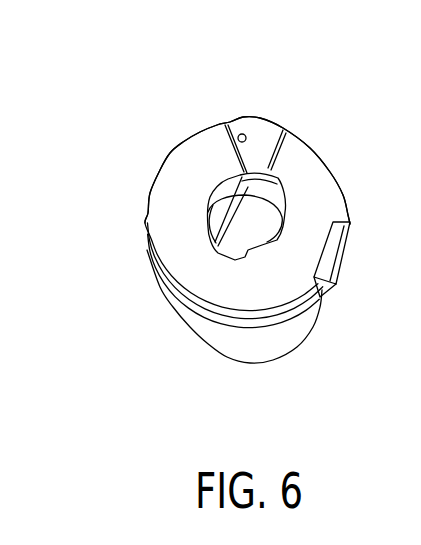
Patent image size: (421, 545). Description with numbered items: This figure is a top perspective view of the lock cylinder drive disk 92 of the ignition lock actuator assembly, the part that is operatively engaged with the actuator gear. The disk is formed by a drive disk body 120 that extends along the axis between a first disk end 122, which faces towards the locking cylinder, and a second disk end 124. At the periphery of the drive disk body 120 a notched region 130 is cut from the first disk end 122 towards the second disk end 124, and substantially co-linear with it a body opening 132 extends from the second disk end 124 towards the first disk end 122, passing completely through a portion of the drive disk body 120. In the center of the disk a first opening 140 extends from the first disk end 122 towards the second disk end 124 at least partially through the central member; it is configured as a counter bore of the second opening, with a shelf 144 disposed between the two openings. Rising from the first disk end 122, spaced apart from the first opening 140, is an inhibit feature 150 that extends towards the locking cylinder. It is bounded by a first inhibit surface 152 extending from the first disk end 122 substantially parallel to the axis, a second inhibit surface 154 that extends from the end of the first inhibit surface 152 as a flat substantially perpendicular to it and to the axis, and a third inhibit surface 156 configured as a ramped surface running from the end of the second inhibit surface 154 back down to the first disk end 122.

The lock cylinder drive disk 92 is at (302, 371).
The drive disk body 120 is at (193, 327).
The first disk end 122 is at (158, 232).
The second disk end 124 is at (229, 358).
The notched region 130 is at (350, 223).
The body opening 132 is at (326, 292).
The first opening 140 is at (220, 195).
The shelf 144 is at (212, 210).
The inhibit feature 150 is at (239, 90).
The first inhibit surface 152 is at (227, 126).
The second inhibit surface 154 is at (263, 123).
The third inhibit surface 156 is at (270, 162).